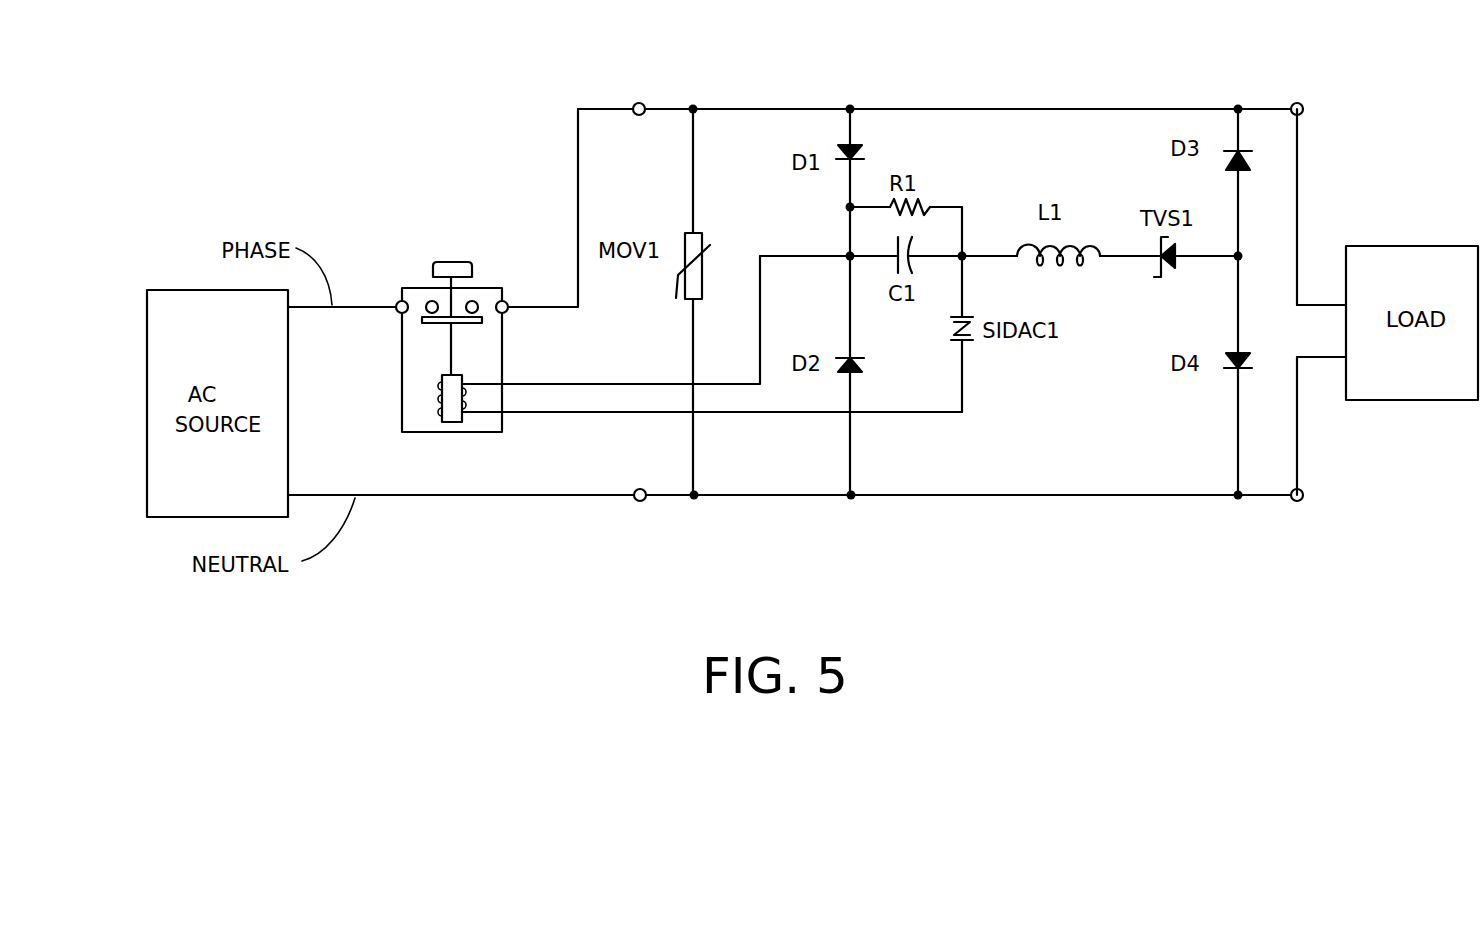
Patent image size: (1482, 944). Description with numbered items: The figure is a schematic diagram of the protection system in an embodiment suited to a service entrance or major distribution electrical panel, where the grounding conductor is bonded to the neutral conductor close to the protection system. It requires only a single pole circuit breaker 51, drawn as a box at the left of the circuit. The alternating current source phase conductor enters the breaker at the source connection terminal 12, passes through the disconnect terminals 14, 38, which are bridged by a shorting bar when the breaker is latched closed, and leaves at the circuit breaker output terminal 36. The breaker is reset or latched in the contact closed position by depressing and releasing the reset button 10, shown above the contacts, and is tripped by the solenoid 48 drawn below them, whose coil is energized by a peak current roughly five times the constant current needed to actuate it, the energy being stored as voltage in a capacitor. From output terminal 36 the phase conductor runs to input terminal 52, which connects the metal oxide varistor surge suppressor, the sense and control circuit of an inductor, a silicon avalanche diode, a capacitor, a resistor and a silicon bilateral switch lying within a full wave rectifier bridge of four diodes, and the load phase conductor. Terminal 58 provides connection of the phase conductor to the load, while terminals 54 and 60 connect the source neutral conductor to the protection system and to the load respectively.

The reset button 10 is at (451, 262).
The AC SOURCE connection terminal 12 is at (400, 300).
The disconnect terminal 14 is at (430, 300).
The circuit breaker output terminal 36 is at (507, 300).
The disconnect terminal 38 is at (476, 300).
The solenoid 48 is at (447, 422).
The single pole circuit breaker 51 is at (508, 436).
The input terminal 52 is at (634, 103).
The neutral input terminal 54 is at (641, 501).
The phase output terminal 58 is at (1293, 103).
The neutral output terminal 60 is at (1297, 503).